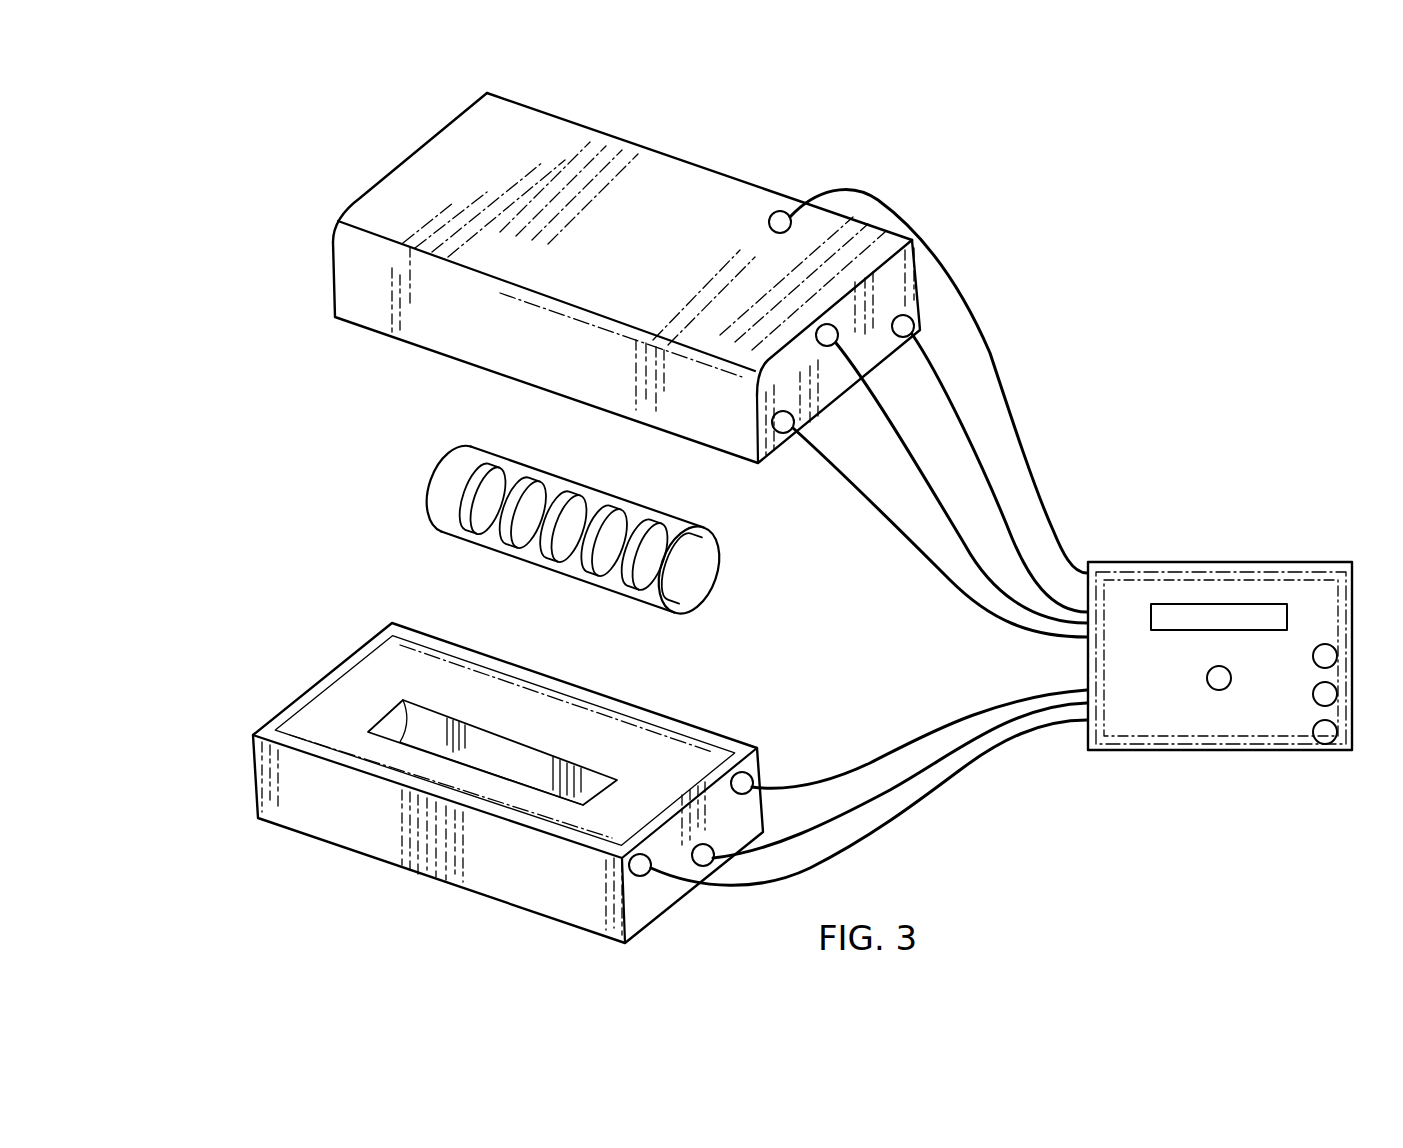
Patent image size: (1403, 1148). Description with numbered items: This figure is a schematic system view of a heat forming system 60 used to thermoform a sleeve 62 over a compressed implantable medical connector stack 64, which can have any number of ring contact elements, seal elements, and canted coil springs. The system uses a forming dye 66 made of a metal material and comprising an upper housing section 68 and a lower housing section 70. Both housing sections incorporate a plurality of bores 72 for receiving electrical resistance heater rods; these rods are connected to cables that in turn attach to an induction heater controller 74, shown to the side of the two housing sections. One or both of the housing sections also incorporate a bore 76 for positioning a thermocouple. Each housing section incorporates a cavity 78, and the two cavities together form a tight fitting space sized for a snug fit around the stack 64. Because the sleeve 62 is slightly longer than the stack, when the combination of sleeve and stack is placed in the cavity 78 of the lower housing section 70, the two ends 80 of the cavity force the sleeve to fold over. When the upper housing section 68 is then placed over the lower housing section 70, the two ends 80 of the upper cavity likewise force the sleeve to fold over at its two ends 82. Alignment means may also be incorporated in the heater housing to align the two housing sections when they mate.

The heat forming system 60 is at (264, 406).
The sleeve 62 is at (556, 476).
The compressed implantable medical connector stack 64 is at (533, 540).
The forming dye 66 is at (608, 106).
The upper housing section 68 is at (667, 175).
The lower housing section 70 is at (380, 847).
The bores 72 is at (830, 348).
The induction heater controller 74 is at (1223, 562).
The bore 76 is at (780, 210).
The cavity 78 is at (513, 758).
The ends of the cavity 80 is at (373, 713).
The ends of the sleeve 82 is at (428, 478).